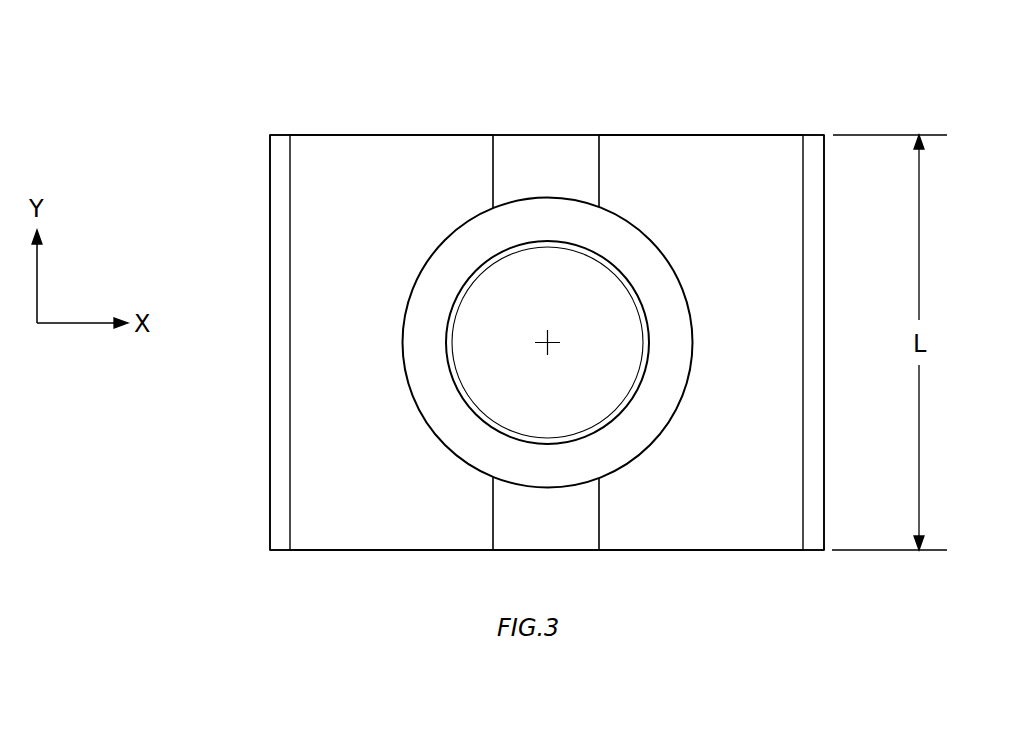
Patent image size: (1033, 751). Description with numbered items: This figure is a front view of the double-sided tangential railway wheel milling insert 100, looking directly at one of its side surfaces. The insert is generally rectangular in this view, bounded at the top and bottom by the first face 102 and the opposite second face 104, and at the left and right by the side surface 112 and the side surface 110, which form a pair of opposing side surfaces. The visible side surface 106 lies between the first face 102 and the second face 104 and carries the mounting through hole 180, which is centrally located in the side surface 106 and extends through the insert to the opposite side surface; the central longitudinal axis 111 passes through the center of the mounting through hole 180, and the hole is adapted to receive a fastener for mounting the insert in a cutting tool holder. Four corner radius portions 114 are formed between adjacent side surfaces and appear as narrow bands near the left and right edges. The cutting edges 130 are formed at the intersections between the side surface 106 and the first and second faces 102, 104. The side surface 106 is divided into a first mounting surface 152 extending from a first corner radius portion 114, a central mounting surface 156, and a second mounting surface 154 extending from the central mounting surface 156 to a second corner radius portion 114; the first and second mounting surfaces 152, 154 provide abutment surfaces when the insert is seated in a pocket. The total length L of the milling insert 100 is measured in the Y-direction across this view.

The double-sided tangential railway wheel milling insert 100 is at (153, 72).
The first face 102 is at (384, 123).
The second face 104 is at (695, 563).
The side surface 106 is at (757, 160).
The side surface 110 is at (824, 235).
The central longitudinal axis 111 is at (552, 345).
The side surface 112 is at (271, 228).
The corner radius portion 114 is at (278, 184).
The cutting edge 130 is at (659, 150).
The first mounting surface 152 is at (322, 433).
The second mounting surface 154 is at (770, 480).
The central mounting surface 156 is at (525, 530).
The mounting through hole 180 is at (453, 356).